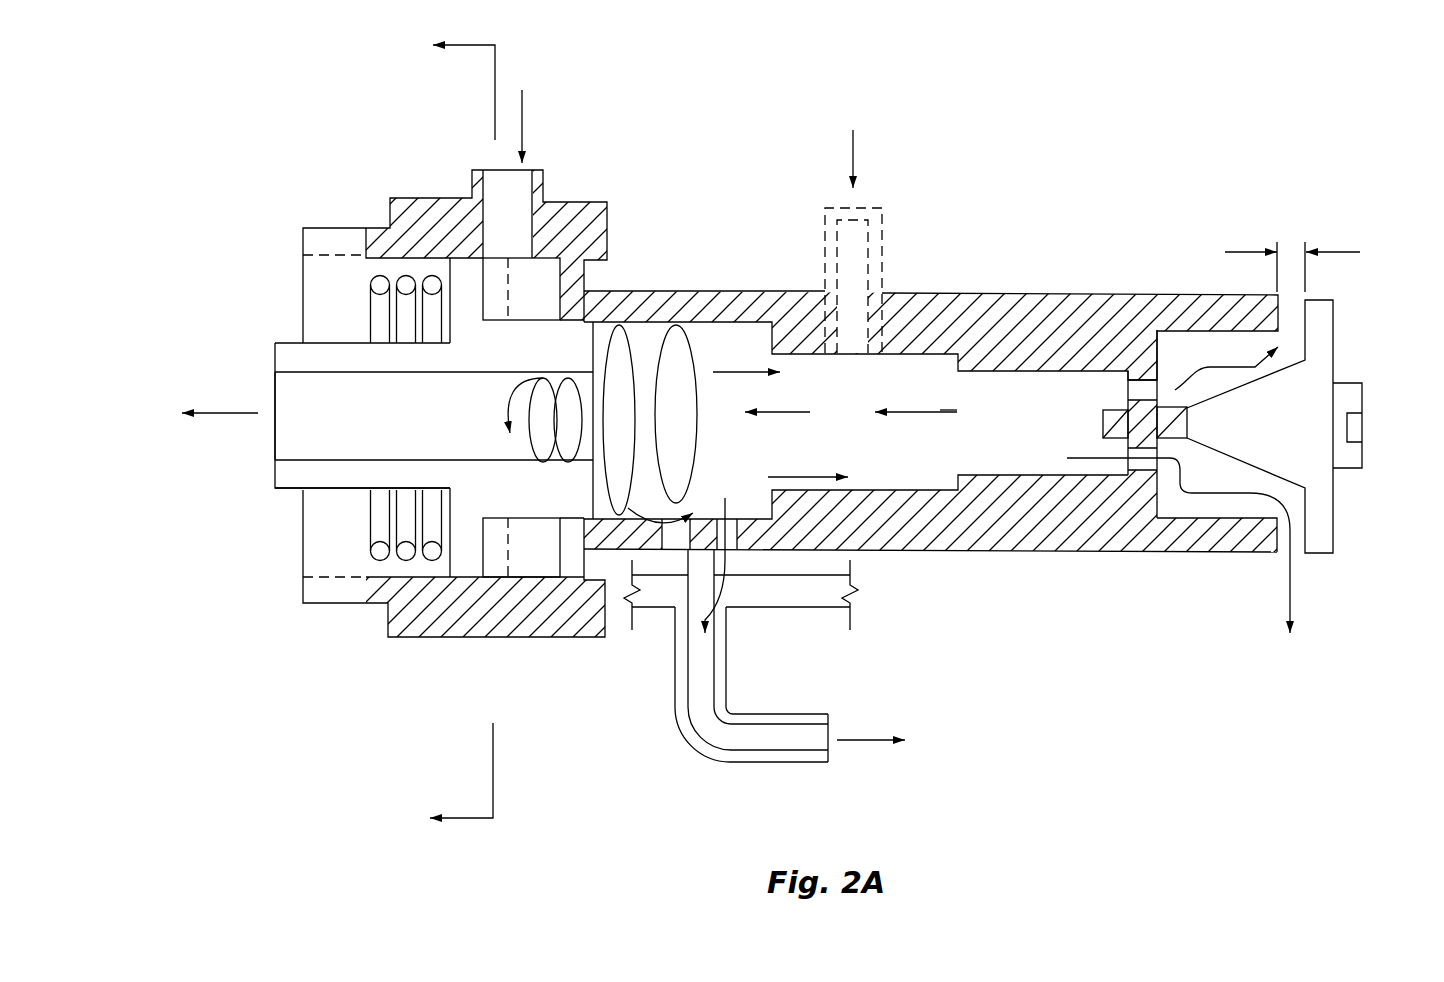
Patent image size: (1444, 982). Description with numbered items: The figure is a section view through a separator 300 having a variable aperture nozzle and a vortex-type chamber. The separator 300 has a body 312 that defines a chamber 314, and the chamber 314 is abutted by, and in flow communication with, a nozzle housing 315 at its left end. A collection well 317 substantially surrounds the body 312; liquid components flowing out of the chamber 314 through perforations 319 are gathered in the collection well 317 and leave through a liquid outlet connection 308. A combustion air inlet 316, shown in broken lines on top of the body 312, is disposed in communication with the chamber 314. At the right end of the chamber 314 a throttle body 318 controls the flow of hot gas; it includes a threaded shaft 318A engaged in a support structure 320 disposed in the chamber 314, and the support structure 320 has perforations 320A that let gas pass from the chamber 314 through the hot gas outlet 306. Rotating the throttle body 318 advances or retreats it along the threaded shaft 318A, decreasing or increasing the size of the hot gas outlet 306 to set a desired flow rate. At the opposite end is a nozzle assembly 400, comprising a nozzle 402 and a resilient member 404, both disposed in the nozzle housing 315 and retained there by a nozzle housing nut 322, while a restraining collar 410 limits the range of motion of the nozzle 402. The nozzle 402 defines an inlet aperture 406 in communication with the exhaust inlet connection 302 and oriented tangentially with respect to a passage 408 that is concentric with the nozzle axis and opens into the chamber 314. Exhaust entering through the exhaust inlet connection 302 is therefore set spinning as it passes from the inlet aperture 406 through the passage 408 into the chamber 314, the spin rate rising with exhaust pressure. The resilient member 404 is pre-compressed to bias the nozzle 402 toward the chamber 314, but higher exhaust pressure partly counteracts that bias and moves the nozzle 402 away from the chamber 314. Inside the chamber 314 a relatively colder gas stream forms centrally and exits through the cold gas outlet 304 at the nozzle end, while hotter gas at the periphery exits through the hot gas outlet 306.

The separator 300 is at (203, 72).
The exhaust inlet connection 302 is at (545, 178).
The cold gas outlet 304 is at (243, 441).
The hot gas outlet 306 is at (1290, 308).
The liquid outlet connection 308 is at (760, 762).
The body 312 is at (940, 294).
The chamber 314 is at (1012, 452).
The nozzle housing 315 is at (608, 228).
The combustion air inlet 316 is at (882, 222).
The collection well 317 is at (767, 607).
The throttle body 318 is at (1335, 360).
The threaded shaft 318A is at (1115, 410).
The perforations 319 is at (668, 545).
The support structure 320 is at (1190, 408).
The perforations 320A is at (1160, 385).
The nozzle housing nut 322 is at (300, 233).
The nozzle assembly 400 is at (241, 519).
The nozzle 402 is at (277, 348).
The resilient member 404 is at (372, 552).
The inlet aperture 406 is at (532, 273).
The passage 408 is at (312, 402).
The restraining collar 410 is at (584, 277).